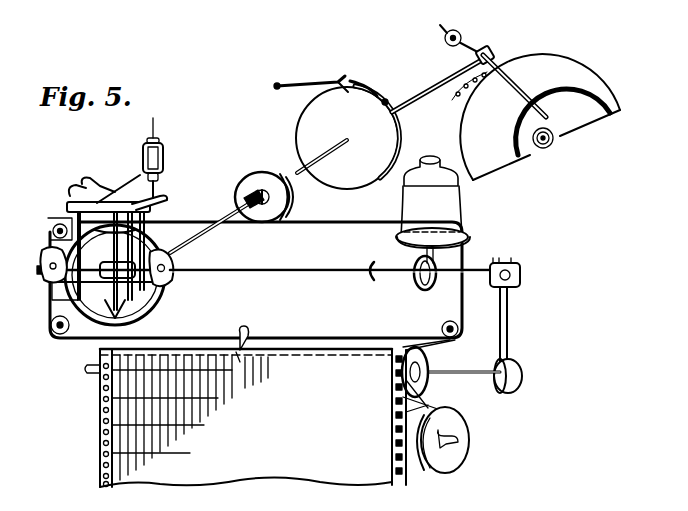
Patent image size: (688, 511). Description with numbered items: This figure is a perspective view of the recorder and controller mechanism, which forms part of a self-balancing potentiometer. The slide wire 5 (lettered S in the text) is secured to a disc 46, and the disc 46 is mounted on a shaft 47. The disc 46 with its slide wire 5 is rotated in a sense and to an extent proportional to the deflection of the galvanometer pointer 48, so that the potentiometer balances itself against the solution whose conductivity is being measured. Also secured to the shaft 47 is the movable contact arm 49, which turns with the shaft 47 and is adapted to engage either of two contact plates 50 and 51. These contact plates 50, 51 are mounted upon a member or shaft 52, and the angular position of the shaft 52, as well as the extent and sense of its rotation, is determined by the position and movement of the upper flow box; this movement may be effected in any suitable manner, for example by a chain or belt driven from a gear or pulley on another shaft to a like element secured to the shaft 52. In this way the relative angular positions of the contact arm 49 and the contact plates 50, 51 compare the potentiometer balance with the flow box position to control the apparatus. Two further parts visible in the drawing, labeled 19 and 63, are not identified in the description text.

The slide wire 5 is at (366, 88).
The shaft 19 is at (334, 180).
The disc 46 is at (312, 128).
The shaft 47 is at (212, 208).
The galvanometer pointer 48 is at (133, 183).
The movable contact arm 49 is at (520, 64).
The contact plate 50 is at (576, 70).
The contact plate 51 is at (300, 94).
The shaft 52 is at (555, 148).
The solenoid 63 is at (468, 200).